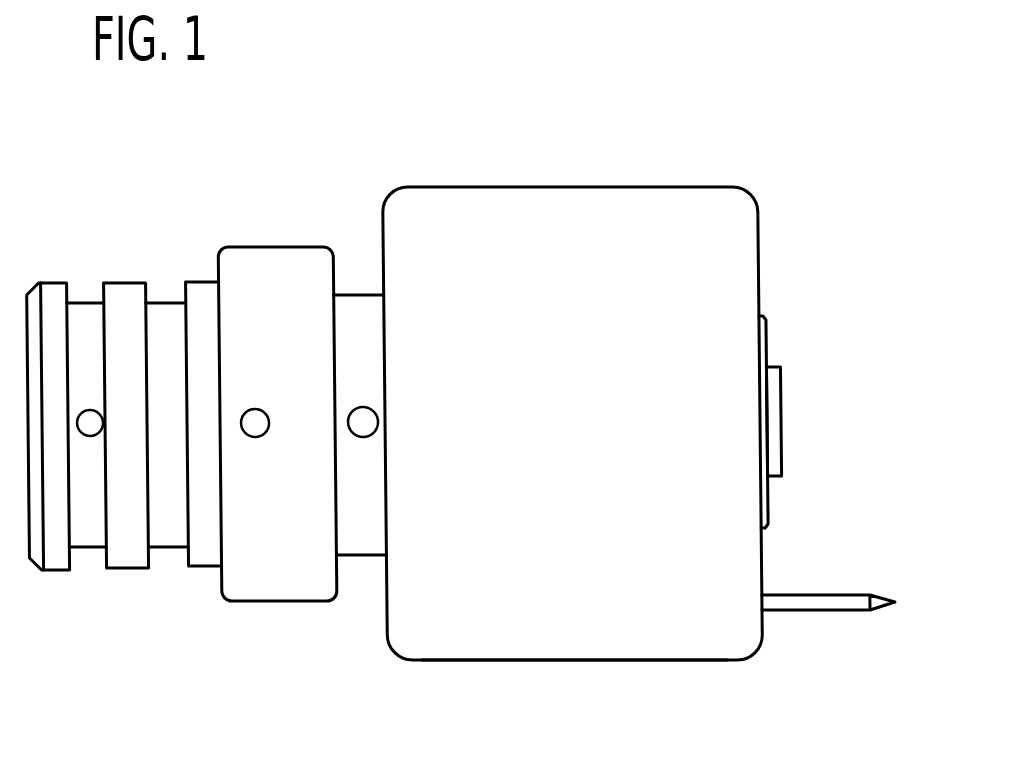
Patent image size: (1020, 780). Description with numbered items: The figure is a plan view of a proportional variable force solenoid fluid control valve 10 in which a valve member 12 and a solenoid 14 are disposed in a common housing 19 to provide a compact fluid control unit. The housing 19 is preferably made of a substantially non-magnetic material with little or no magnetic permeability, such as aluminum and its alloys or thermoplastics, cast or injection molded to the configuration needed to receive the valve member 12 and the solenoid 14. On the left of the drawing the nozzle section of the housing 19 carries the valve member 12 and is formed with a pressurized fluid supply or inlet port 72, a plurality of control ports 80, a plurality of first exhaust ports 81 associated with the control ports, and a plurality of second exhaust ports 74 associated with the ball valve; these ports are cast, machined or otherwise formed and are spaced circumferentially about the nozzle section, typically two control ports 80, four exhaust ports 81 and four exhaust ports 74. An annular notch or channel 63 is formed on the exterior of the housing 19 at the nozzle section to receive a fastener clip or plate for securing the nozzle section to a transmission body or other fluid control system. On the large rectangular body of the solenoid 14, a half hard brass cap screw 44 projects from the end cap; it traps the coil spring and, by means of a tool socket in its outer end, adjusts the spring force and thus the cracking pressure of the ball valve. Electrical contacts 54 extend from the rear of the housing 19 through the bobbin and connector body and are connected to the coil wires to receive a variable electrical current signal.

The proportional variable force solenoid fluid control valve 10 is at (260, 227).
The valve member 12 is at (195, 262).
The solenoid 14 is at (495, 185).
The common housing 19 is at (567, 650).
The cap screw 44 is at (775, 389).
The electrical contacts 54 is at (845, 603).
The annular notch or channel 63 is at (348, 572).
The inlet port 72 is at (90, 432).
The second exhaust ports 74 is at (361, 408).
The control ports 80 is at (170, 432).
The first exhaust ports 81 is at (255, 437).